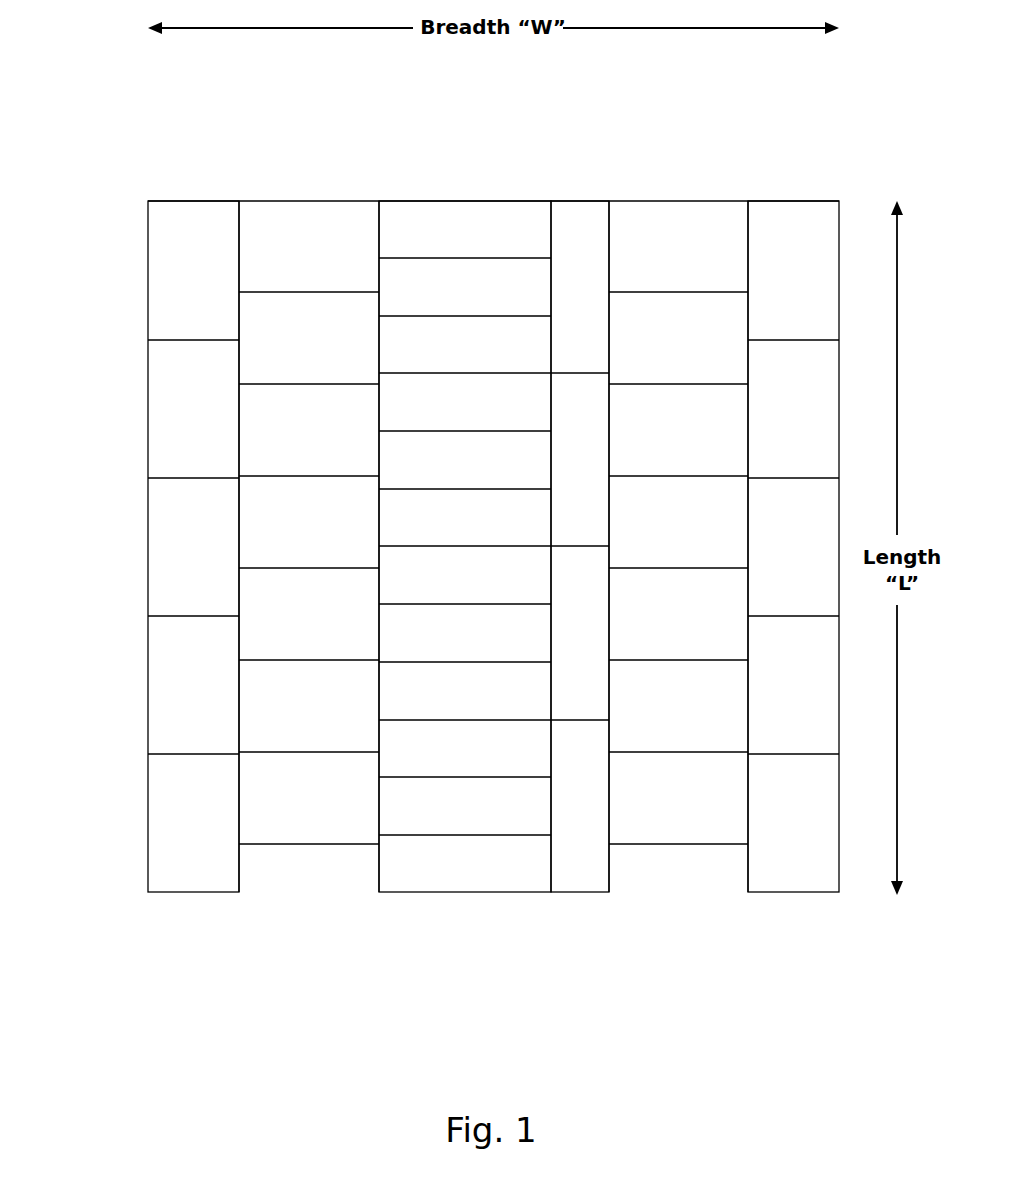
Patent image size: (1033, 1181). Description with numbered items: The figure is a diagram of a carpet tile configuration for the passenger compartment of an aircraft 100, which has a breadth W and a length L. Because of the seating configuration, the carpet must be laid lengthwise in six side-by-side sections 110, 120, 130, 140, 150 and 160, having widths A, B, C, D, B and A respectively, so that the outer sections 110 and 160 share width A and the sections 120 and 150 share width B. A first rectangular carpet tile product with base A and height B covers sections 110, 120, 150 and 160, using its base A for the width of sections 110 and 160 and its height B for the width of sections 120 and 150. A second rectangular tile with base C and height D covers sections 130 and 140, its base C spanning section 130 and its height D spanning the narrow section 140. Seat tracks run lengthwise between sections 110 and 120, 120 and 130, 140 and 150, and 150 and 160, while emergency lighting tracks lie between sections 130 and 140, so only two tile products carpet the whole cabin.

The aircraft 100 is at (106, 231).
The first carpet section 110 is at (148, 72).
The second carpet section 120 is at (239, 72).
The third carpet section 130 is at (379, 72).
The fourth carpet section 140 is at (551, 72).
The fifth carpet section 150 is at (609, 72).
The sixth carpet section 160 is at (839, 72).